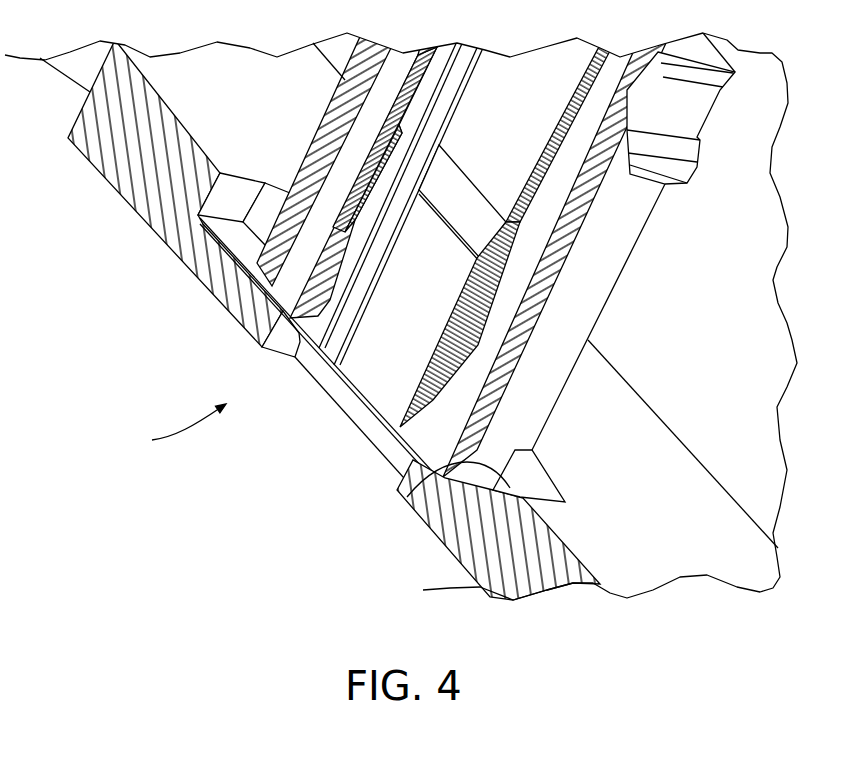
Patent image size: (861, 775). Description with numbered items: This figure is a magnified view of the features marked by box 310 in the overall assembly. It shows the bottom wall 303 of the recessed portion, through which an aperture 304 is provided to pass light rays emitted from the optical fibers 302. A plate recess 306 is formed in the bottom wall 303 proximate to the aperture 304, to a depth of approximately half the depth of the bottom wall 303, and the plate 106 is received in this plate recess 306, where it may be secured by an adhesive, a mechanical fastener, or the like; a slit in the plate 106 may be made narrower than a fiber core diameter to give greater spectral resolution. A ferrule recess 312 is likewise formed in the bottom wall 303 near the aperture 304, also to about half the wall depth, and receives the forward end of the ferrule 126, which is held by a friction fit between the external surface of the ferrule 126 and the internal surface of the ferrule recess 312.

The plate 106 is at (212, 246).
The ferrule 126 is at (395, 378).
The optical fibers 302 is at (340, 280).
The bottom wall 303 is at (682, 512).
The aperture 304 is at (290, 357).
The plate recess 306 is at (495, 492).
The box 310 is at (164, 427).
The ferrule recess 312 is at (412, 482).